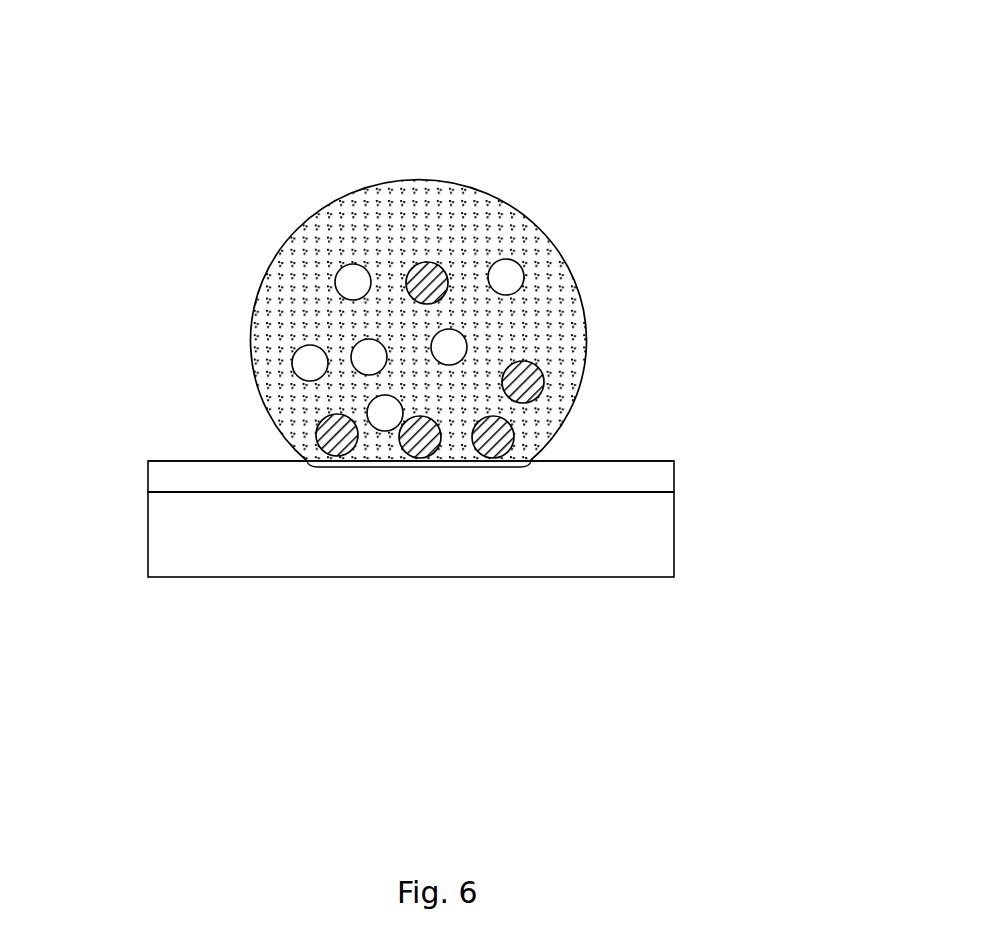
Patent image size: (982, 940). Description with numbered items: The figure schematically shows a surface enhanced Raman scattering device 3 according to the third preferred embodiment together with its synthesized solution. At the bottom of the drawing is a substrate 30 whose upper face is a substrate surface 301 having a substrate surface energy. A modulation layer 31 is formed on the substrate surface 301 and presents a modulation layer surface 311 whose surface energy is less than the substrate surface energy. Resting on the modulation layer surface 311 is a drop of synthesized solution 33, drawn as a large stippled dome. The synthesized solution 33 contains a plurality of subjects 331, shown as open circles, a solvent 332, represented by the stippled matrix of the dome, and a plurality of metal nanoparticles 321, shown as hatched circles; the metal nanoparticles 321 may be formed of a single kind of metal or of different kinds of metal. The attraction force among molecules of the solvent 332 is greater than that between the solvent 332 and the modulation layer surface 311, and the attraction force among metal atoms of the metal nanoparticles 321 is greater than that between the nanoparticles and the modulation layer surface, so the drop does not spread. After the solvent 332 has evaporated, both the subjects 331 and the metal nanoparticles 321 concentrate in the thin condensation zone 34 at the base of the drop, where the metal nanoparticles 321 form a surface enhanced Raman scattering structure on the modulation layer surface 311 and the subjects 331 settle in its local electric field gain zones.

The surface enhanced Raman scattering device 3 is at (438, 35).
The substrate 30 is at (667, 556).
The substrate surface 301 is at (172, 492).
The modulation layer 31 is at (667, 480).
The modulation layer surface 311 is at (160, 460).
The synthesized solution 33 is at (388, 294).
The subjects 331 is at (348, 277).
The solvent 332 is at (352, 214).
The metal nanoparticles 321 is at (325, 430).
The condensation zone 34 is at (423, 467).